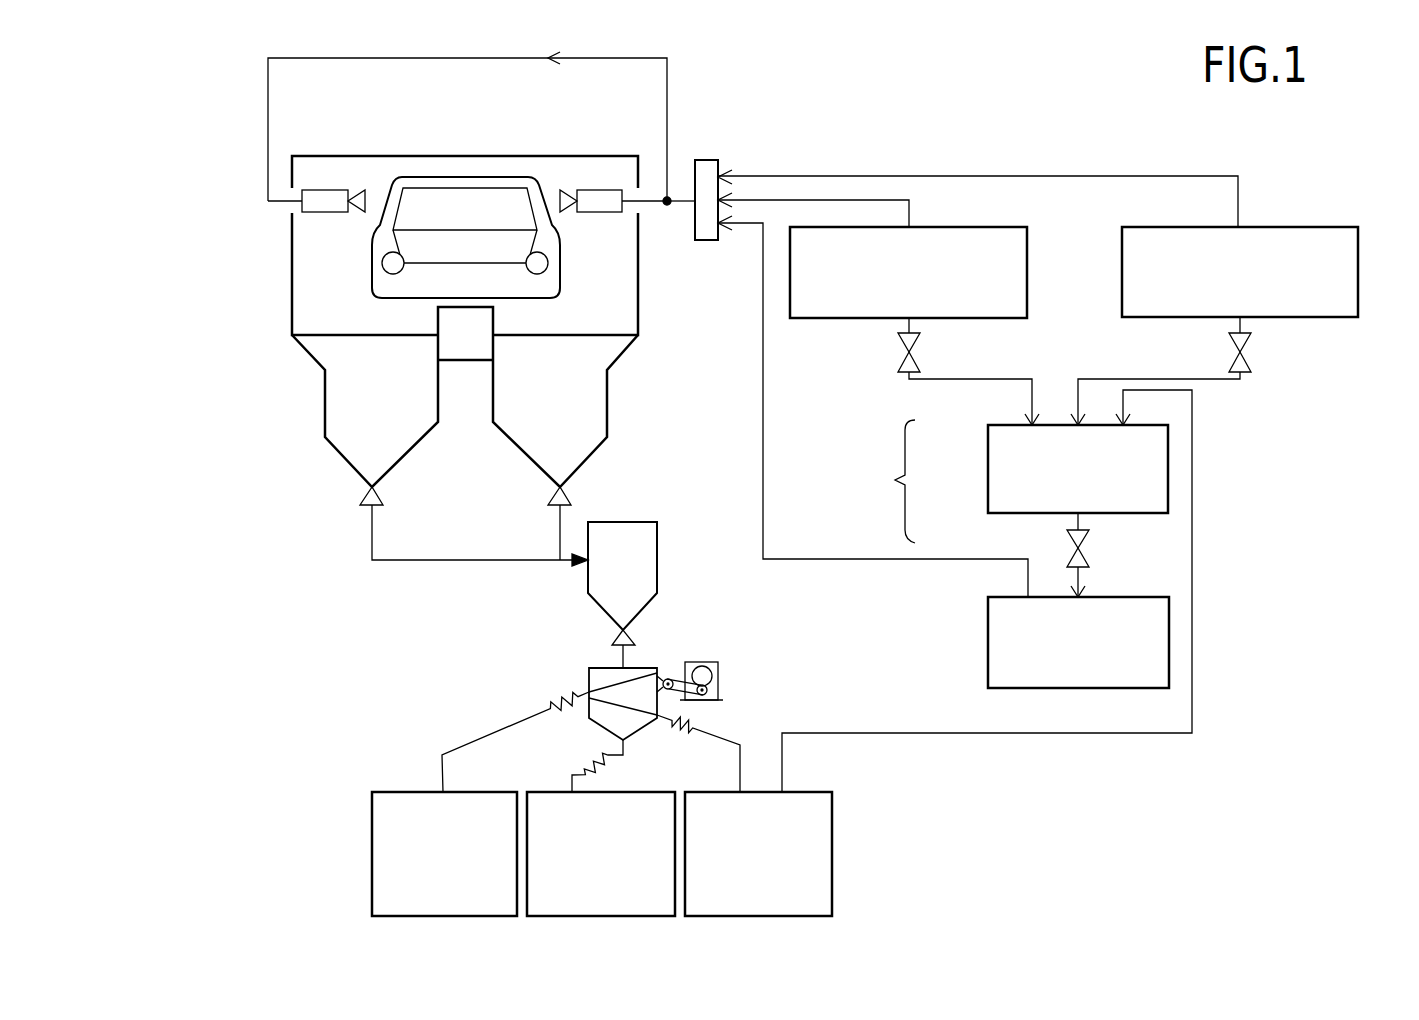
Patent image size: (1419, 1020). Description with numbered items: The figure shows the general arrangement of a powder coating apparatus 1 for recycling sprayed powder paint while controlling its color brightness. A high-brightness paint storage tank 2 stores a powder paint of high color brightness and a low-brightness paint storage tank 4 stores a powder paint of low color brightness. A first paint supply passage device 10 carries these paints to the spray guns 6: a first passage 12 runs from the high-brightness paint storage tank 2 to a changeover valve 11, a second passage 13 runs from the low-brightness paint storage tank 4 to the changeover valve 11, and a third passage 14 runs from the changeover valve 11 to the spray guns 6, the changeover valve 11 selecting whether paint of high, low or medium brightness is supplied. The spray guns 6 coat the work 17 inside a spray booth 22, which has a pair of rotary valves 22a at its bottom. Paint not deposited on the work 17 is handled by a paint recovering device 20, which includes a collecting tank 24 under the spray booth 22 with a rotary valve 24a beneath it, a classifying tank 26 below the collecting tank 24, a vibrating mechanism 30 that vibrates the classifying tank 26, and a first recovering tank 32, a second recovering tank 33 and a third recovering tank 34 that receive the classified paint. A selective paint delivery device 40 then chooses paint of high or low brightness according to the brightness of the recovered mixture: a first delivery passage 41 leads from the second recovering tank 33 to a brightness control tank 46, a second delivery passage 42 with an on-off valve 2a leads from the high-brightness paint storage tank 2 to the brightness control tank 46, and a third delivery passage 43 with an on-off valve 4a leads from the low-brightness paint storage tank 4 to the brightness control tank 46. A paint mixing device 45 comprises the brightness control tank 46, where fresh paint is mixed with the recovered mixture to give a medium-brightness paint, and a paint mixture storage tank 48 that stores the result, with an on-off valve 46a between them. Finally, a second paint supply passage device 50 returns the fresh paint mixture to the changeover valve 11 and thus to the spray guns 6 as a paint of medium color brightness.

The powder coating apparatus 1 is at (835, 123).
The high-brightness paint storage tank 2 is at (1027, 278).
The on-off valve 2a is at (920, 340).
The low-brightness paint storage tank 4 is at (1358, 272).
The on-off valve 4a is at (1250, 340).
The spray guns 6 is at (327, 190).
The first paint supply passage device 10 is at (993, 158).
The changeover valve 11 is at (707, 160).
The first passage 12 is at (880, 200).
The second passage 13 is at (1122, 176).
The third passage 14 is at (683, 198).
The work 17 is at (467, 177).
The paint recovering device 20 is at (523, 673).
The spray booth 22 is at (292, 272).
The rotary valves 22a is at (360, 497).
The collecting tank 24 is at (635, 553).
The rotary valve 24a is at (636, 640).
The classifying tank 26 is at (589, 680).
The vibrating mechanism 30 is at (725, 673).
The first recovering tank 32 is at (372, 858).
The second recovering tank 33 is at (840, 858).
The third recovering tank 34 is at (630, 790).
The selective paint delivery device 40 is at (1235, 478).
The first delivery passage 41 is at (1192, 540).
The second delivery passage 42 is at (905, 377).
The third delivery passage 43 is at (1218, 380).
The paint mixing device 45 is at (888, 481).
The brightness control tank 46 is at (988, 462).
The on-off valve 46a is at (1090, 537).
The paint mixture storage tank 48 is at (1013, 597).
The second paint supply passage device 50 is at (875, 560).